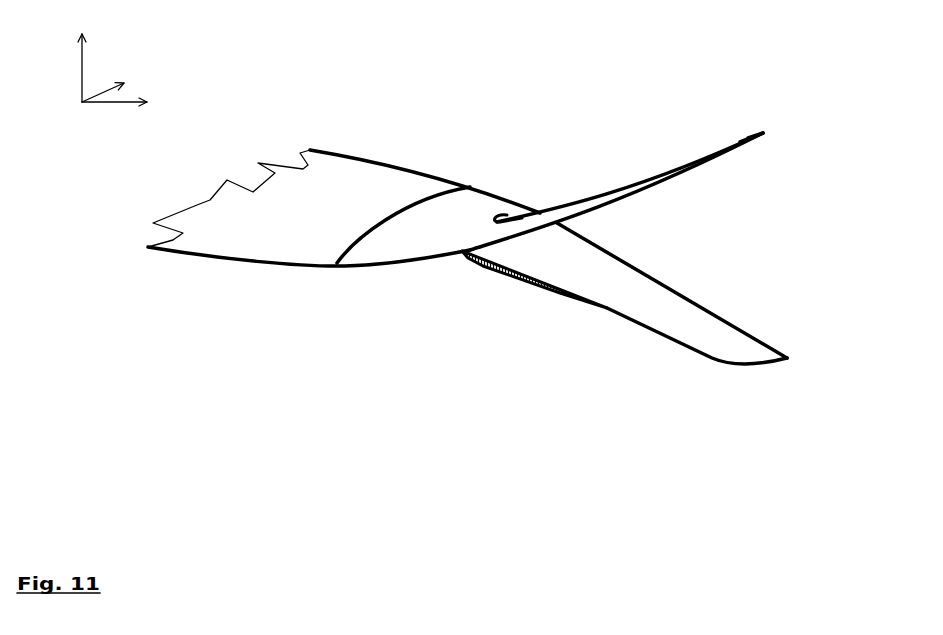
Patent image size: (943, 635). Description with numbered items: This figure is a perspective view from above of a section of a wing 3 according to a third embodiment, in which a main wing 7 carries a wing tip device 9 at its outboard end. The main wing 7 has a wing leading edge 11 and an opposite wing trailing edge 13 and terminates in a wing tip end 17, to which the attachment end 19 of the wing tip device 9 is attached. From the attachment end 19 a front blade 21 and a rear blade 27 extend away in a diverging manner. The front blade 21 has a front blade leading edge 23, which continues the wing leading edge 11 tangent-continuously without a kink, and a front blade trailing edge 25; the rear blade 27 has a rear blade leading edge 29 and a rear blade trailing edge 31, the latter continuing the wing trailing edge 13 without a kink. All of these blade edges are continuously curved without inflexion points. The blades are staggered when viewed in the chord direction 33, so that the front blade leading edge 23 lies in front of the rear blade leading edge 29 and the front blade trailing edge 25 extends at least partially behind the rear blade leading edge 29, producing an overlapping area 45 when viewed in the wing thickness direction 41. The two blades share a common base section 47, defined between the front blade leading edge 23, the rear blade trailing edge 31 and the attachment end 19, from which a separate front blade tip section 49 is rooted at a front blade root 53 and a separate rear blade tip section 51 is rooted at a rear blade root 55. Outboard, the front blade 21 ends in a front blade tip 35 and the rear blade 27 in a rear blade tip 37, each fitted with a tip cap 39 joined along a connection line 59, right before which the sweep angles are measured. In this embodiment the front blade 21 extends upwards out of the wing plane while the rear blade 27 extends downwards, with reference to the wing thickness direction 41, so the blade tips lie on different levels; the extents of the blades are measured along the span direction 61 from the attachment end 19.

The wing 3 is at (290, 108).
The main wing 7 is at (287, 223).
The wing tip device 9 is at (513, 333).
The wing leading edge 11 is at (227, 260).
The wing trailing edge 13 is at (347, 153).
The wing tip end 17 is at (435, 192).
The attachment end 19 is at (453, 208).
The front blade 21 is at (527, 255).
The front blade leading edge 23 is at (493, 247).
The front blade trailing edge 25 is at (655, 175).
The rear blade 27 is at (578, 278).
The rear blade leading edge 29 is at (622, 320).
The rear blade trailing edge 31 is at (673, 290).
The chord direction 33 is at (111, 75).
The front blade tip 35 is at (738, 137).
The rear blade tip 37 is at (737, 342).
The tip cap 39 is at (763, 358).
The wing thickness direction 41 is at (82, 56).
The overlapping area 45 is at (540, 258).
The base section 47 is at (447, 220).
The front blade tip section 49 is at (598, 198).
The rear blade tip section 51 is at (613, 283).
The front blade root 53 is at (447, 237).
The rear blade root 55 is at (513, 218).
The connection line 59 is at (743, 366).
The span direction 61 is at (129, 102).